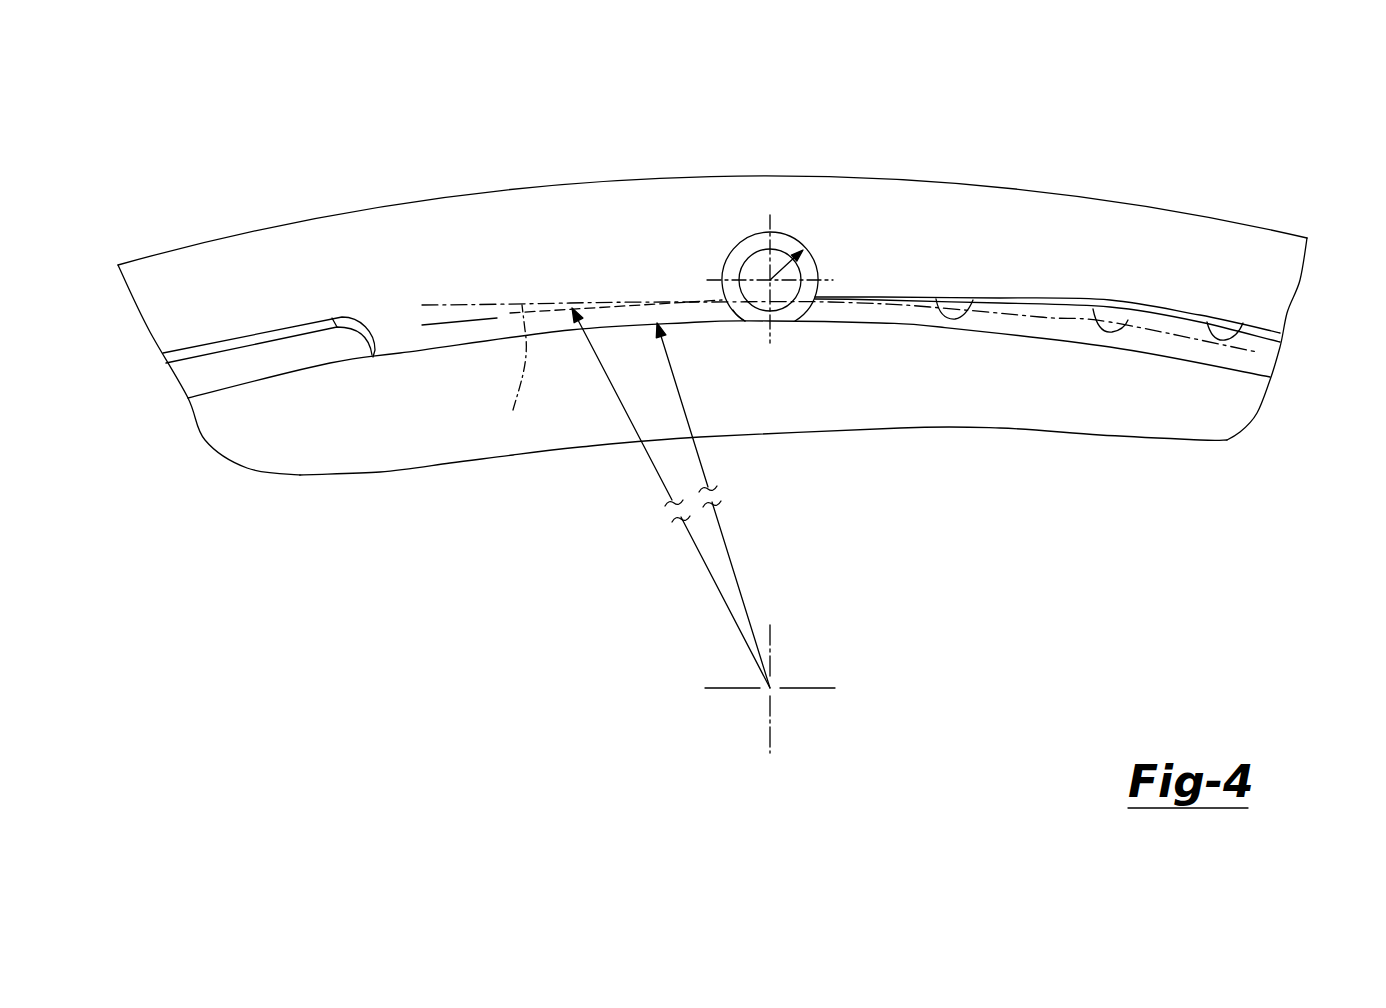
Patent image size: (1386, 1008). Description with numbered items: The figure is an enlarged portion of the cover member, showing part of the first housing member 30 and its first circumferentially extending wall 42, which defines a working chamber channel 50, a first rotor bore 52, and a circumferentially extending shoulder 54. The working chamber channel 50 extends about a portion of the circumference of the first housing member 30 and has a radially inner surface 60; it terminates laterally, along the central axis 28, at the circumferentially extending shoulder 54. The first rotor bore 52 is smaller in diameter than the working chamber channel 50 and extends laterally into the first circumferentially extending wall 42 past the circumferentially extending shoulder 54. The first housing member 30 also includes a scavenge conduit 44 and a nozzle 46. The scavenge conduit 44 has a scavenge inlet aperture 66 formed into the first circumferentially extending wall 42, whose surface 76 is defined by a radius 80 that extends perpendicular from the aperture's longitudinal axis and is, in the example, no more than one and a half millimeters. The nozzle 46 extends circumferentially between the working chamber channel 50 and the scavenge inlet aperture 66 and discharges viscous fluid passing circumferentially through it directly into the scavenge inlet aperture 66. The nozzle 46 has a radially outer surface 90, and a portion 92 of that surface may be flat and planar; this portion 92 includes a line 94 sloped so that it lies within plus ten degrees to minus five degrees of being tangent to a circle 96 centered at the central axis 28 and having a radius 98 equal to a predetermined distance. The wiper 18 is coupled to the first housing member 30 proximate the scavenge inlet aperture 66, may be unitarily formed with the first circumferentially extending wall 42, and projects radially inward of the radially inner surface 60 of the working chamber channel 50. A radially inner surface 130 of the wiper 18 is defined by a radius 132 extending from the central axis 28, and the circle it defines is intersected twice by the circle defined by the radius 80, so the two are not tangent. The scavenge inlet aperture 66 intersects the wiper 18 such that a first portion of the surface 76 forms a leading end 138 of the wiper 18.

The wiper 18 is at (403, 330).
The central axis 28 is at (775, 680).
The first housing member 30 is at (350, 227).
The first circumferentially extending wall 42 is at (235, 262).
The scavenge conduit 44 is at (794, 224).
The nozzle 46 is at (884, 314).
The working chamber channel 50 is at (1233, 333).
The first rotor bore 52 is at (1157, 355).
The circumferentially extending shoulder 54 is at (1242, 358).
The radially inner surface 60 is at (1233, 333).
The scavenge inlet aperture 66 is at (725, 265).
The surface 76 is at (742, 250).
The radius 80 is at (781, 285).
The radially outer surface 90 is at (1128, 322).
The portion 92 is at (975, 297).
The line 94 is at (520, 303).
The circle 96 is at (512, 375).
The radius 98 is at (657, 475).
The radially inner surface 130 is at (432, 348).
The radius 132 is at (723, 532).
The leading end 138 is at (727, 317).